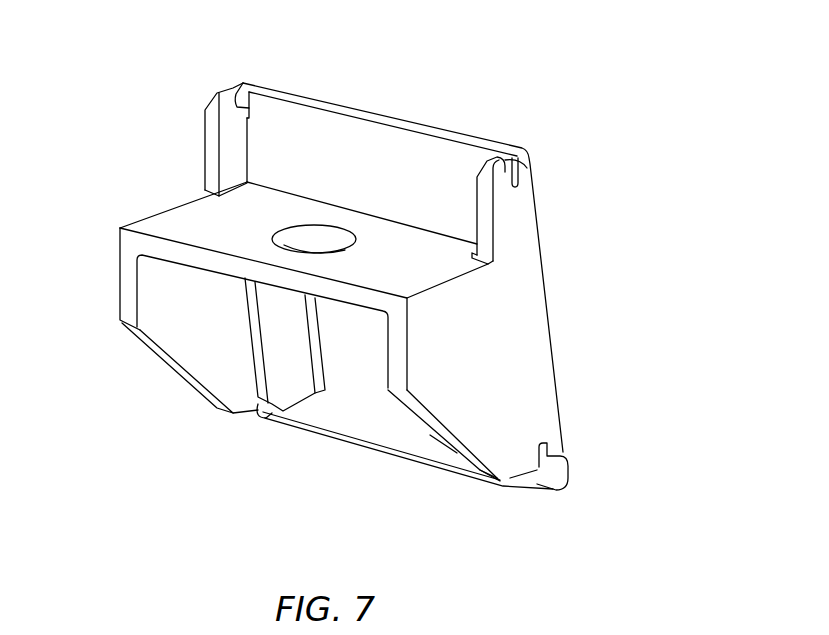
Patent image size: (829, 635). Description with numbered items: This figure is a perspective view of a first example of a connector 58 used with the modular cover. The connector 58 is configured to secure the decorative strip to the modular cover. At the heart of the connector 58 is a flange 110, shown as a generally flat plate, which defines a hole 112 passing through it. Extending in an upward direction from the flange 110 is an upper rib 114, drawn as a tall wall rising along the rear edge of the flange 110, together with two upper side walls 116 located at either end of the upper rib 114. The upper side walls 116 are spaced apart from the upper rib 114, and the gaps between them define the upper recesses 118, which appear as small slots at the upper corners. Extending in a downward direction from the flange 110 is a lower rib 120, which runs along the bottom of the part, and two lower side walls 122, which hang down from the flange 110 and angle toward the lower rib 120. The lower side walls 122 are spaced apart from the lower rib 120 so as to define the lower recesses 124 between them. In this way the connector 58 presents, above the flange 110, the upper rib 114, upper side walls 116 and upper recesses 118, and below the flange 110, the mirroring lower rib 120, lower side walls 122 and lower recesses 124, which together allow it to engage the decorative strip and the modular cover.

The connector 58 is at (597, 98).
The flange 110 is at (170, 231).
The hole 112 is at (313, 242).
The upper rib 114 is at (347, 106).
The upper side walls 116 is at (217, 141).
The upper recesses 118 is at (250, 84).
The lower rib 120 is at (353, 437).
The lower side walls 122 is at (157, 357).
The lower recesses 124 is at (263, 420).